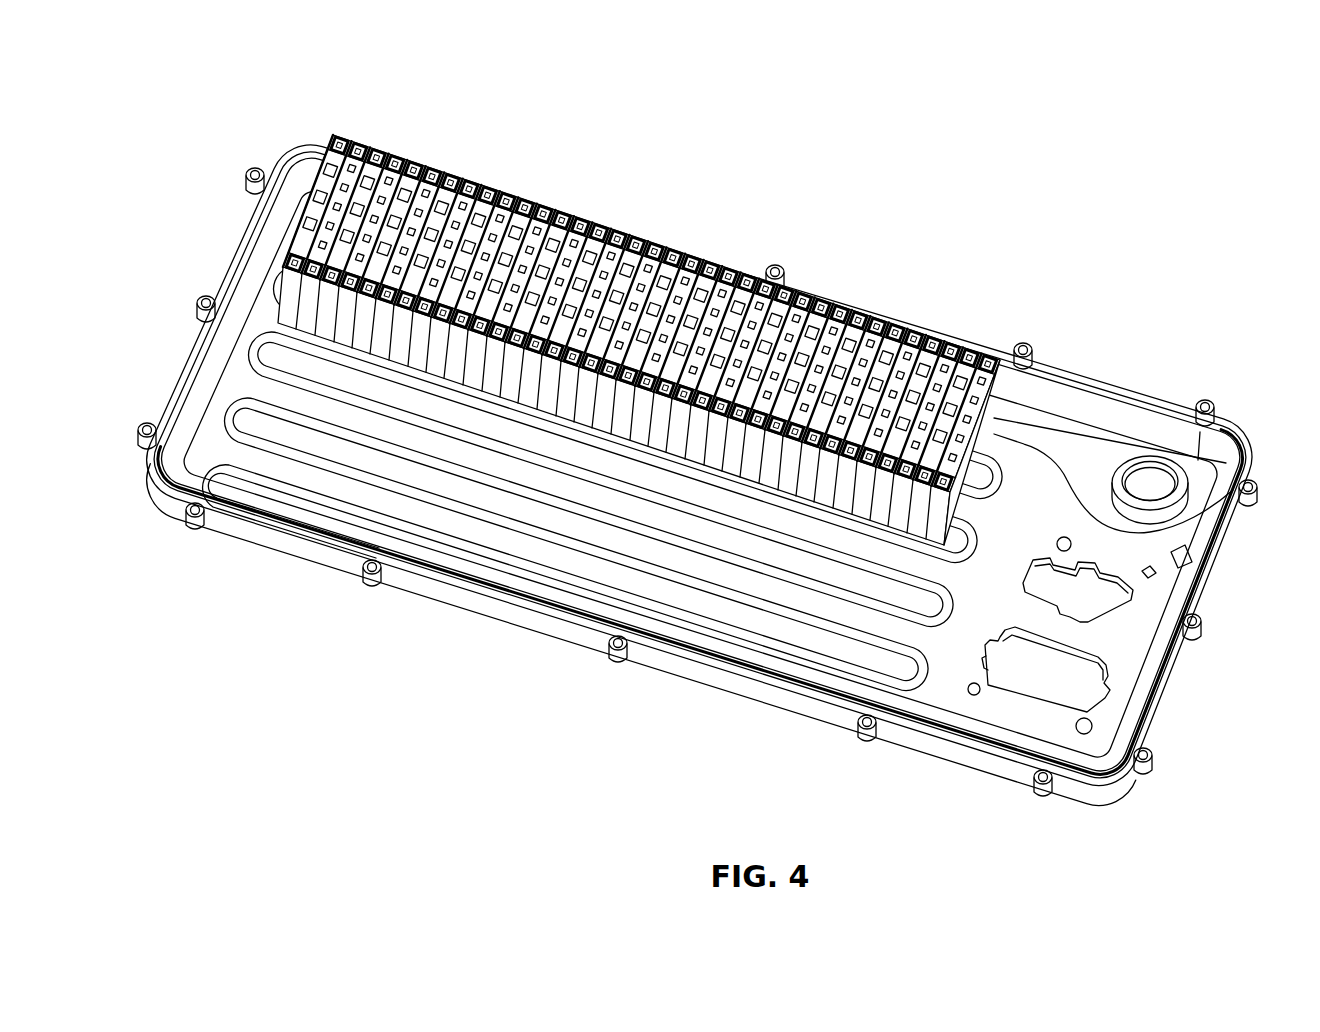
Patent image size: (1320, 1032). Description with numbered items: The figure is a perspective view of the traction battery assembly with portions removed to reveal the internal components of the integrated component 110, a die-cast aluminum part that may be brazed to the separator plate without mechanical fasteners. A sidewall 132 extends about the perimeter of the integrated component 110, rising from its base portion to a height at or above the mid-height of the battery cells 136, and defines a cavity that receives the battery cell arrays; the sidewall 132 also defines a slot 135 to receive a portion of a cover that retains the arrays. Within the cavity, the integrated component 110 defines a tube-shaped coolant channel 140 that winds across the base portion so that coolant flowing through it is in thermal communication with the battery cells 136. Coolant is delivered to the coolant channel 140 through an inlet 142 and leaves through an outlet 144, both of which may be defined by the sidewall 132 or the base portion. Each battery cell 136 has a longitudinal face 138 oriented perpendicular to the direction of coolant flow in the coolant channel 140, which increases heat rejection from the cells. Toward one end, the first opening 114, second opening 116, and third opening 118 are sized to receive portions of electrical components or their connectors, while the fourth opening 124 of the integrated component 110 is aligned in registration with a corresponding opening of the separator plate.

The integrated component 110 is at (727, 457).
The first opening 114 is at (1150, 534).
The second opening 116 is at (1135, 607).
The third opening 118 is at (1095, 702).
The fourth opening 124 is at (1190, 488).
The sidewall 132 is at (1153, 400).
The slot 135 is at (1095, 384).
The battery cells 136 is at (396, 154).
The longitudinal face 138 is at (687, 306).
The coolant channel 140 is at (795, 650).
The inlet 142 is at (1213, 573).
The outlet 144 is at (1133, 768).